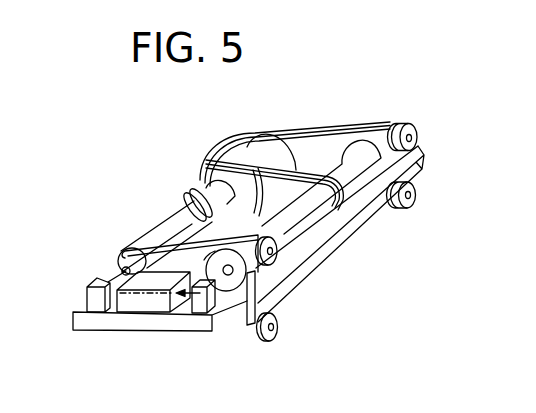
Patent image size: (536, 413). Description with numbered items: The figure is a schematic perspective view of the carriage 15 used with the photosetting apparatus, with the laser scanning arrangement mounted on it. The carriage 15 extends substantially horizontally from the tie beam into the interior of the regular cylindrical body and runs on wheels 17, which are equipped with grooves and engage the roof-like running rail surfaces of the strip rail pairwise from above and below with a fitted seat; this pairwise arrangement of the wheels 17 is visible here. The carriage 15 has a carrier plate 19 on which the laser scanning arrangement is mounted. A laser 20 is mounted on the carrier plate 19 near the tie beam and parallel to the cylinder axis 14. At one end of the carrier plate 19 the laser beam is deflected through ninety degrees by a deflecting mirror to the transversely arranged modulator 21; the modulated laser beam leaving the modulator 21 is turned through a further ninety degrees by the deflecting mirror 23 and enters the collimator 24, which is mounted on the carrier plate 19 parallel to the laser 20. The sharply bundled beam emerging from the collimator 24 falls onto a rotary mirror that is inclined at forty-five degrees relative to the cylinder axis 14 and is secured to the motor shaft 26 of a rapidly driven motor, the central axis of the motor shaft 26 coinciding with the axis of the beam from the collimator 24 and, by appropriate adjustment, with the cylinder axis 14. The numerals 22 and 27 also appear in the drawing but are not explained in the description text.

The cylinder axis 14 is at (114, 285).
The carriage 15 is at (186, 327).
The wheels 17 is at (412, 125).
The carrier plate 19 is at (104, 328).
The laser 20 is at (312, 212).
The modulator 21 is at (152, 303).
The stop block 22 is at (198, 309).
The deflecting mirror 23 is at (87, 297).
The collimator 24 is at (158, 219).
The motor shaft 26 is at (198, 184).
The belt 27 is at (246, 150).